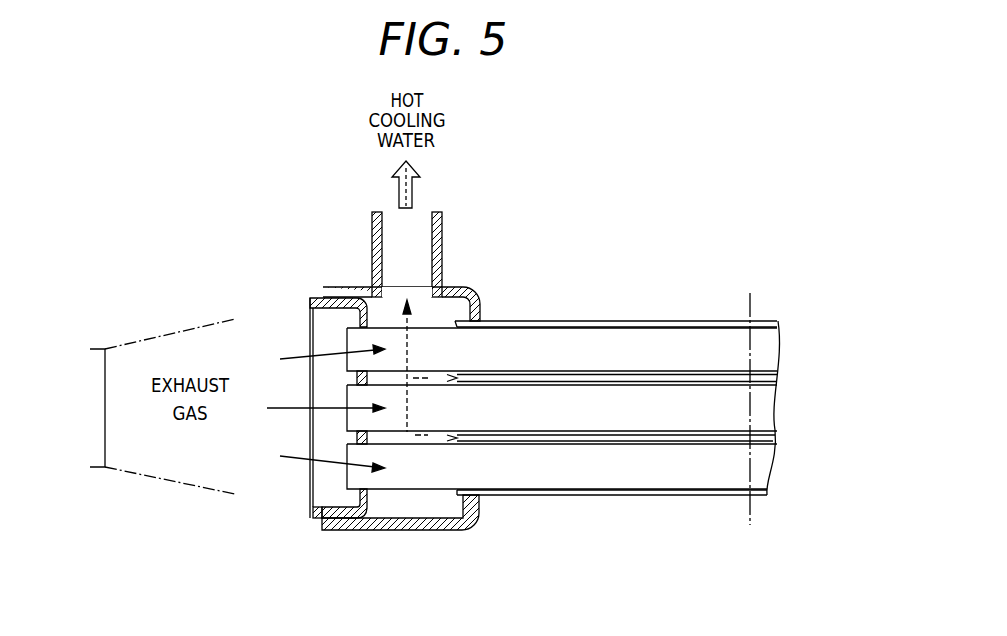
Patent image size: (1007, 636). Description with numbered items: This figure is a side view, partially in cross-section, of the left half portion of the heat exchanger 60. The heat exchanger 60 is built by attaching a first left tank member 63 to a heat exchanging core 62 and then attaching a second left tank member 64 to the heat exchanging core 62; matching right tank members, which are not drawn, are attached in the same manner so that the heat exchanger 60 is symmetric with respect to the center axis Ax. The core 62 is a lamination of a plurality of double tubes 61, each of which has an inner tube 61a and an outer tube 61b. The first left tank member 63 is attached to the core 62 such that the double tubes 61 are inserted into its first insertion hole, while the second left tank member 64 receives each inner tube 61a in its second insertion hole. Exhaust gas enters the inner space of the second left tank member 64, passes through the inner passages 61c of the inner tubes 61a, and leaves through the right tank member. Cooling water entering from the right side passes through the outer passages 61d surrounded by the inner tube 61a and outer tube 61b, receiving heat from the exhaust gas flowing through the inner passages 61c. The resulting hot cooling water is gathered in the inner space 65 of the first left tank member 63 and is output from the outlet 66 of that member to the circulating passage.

The heat exchanger 60 is at (579, 382).
The double tube 61 is at (437, 322).
The inner tube 61a is at (631, 327).
The outer tube 61b is at (592, 322).
The inner passage 61c is at (679, 352).
The outer passage 61d is at (722, 322).
The heat exchanging core 62 is at (647, 502).
The first left tank member 63 is at (385, 531).
The second left tank member 64 is at (357, 509).
The inner space 65 is at (393, 302).
The outlet 66 is at (372, 220).
The center axis Ax is at (752, 307).